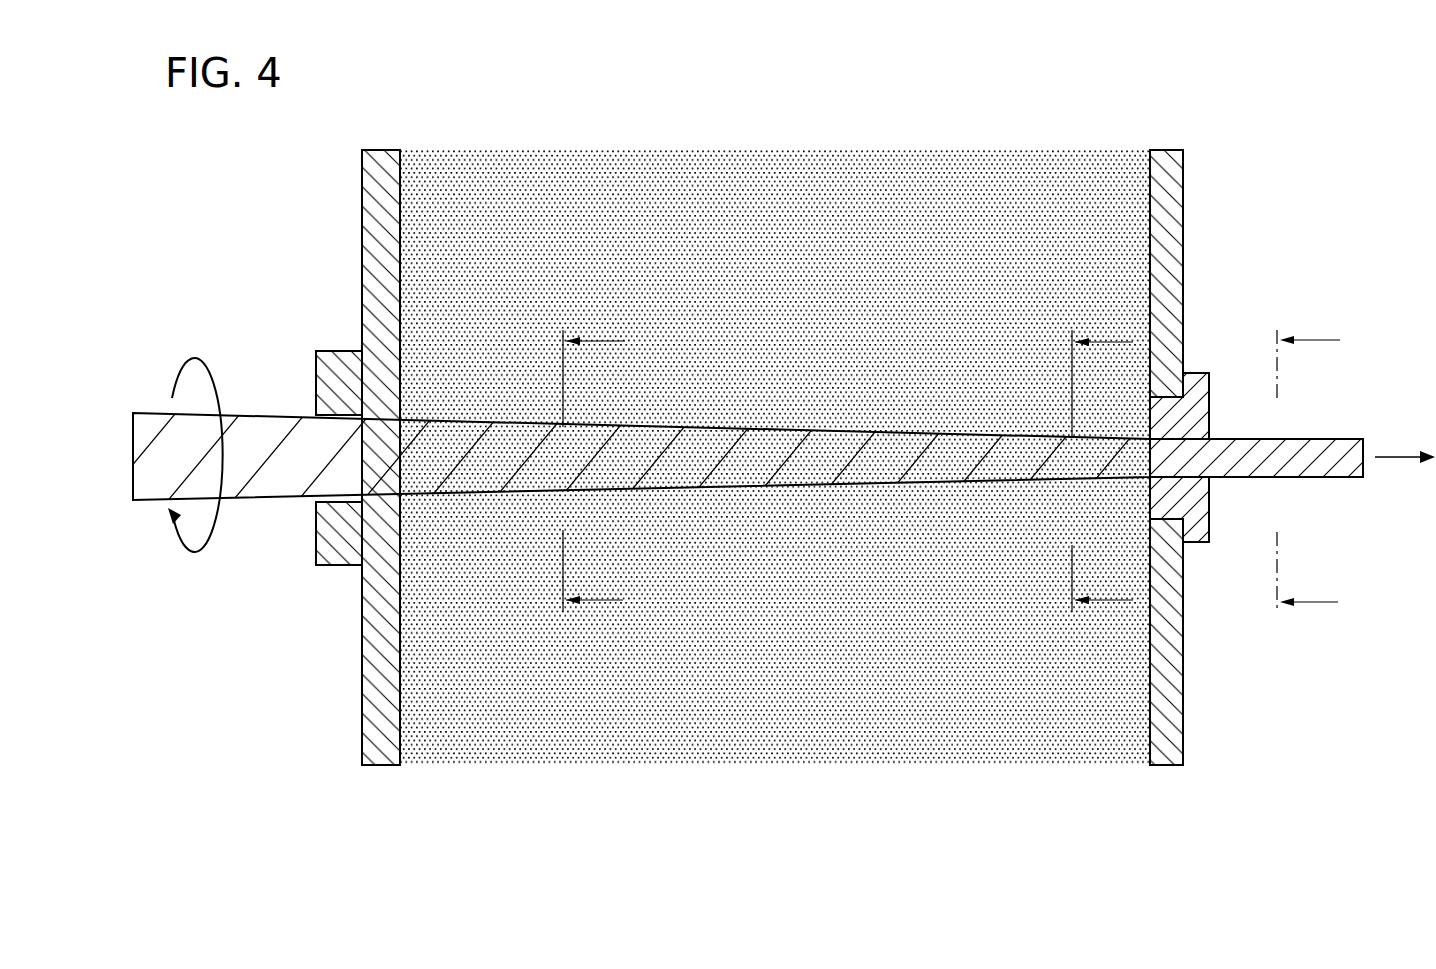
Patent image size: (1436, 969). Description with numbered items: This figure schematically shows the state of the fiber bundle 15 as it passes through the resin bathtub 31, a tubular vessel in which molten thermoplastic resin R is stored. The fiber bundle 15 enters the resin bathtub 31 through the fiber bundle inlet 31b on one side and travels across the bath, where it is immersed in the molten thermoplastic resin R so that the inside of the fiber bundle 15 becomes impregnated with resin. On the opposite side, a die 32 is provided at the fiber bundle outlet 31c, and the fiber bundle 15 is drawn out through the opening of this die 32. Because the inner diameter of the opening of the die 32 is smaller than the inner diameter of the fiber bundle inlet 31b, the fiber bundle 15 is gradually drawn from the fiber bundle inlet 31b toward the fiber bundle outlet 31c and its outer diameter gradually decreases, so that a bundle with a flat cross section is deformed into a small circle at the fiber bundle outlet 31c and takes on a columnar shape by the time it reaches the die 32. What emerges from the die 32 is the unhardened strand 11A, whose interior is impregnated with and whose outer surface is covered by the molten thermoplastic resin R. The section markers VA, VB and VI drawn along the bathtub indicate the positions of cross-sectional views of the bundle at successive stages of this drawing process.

The resin bathtub 31 is at (350, 283).
The fiber bundle inlet 31b is at (305, 528).
The fiber bundle outlet 31c is at (1215, 522).
The die 32 is at (1193, 373).
The fiber bundle 15 is at (760, 427).
The unhardened strand 11A is at (1345, 439).
The thermoplastic resin R is at (866, 596).
The section line VA is at (596, 457).
The section line VB is at (1106, 457).
The section line VI is at (1308, 459).